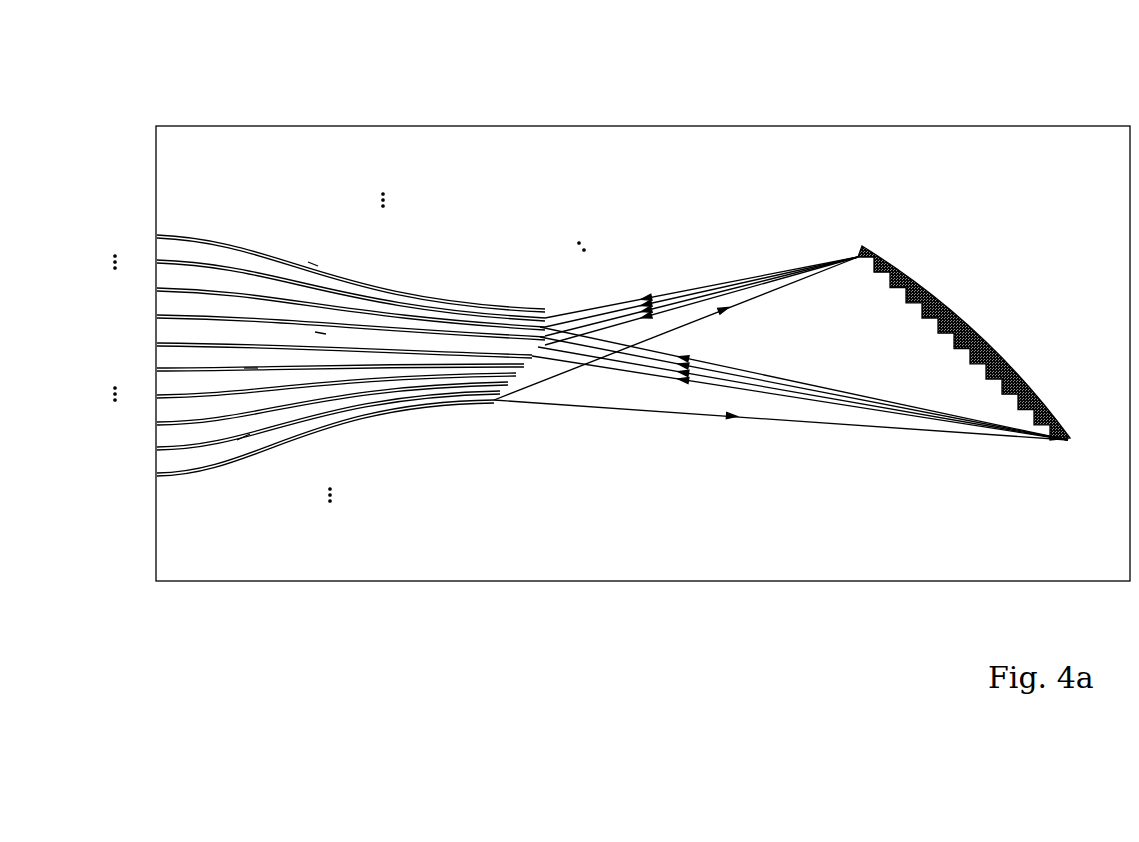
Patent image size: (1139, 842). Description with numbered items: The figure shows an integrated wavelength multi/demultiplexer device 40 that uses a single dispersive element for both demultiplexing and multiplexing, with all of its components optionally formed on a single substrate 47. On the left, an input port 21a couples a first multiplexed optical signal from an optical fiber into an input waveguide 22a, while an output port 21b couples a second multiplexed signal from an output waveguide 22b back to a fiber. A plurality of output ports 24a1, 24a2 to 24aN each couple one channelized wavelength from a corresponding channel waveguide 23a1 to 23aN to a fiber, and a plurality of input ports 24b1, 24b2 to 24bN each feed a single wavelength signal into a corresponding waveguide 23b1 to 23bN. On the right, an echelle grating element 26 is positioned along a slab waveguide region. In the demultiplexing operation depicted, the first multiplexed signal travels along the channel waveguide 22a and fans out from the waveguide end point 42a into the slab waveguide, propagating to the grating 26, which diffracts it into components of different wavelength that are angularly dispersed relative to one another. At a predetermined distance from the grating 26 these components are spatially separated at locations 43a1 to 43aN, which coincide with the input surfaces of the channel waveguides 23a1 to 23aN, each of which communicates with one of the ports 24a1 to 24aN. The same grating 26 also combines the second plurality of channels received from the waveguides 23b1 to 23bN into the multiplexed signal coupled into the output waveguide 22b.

The integrated multi/demultiplexer device 40 is at (607, 297).
The substrate 47 is at (790, 157).
The echelle grating element 26 is at (958, 308).
The input port 21a is at (400, 462).
The output port 21b is at (317, 344).
The input waveguide 22a is at (304, 444).
The output waveguide 22b is at (315, 258).
The channel waveguide 23a1 is at (320, 333).
The channel waveguide 23aN is at (313, 263).
The input waveguide 23b1 is at (243, 437).
The input waveguide 23bN is at (250, 368).
The output port 24a1 is at (317, 273).
The output port 24a2 is at (317, 303).
The output port 24aN is at (315, 235).
The input port 24b1 is at (294, 461).
The input port 24b2 is at (298, 408).
The input port 24bN is at (304, 418).
The waveguide end point 42a is at (495, 402).
The location 43a1 is at (543, 343).
The location 43aN is at (575, 315).